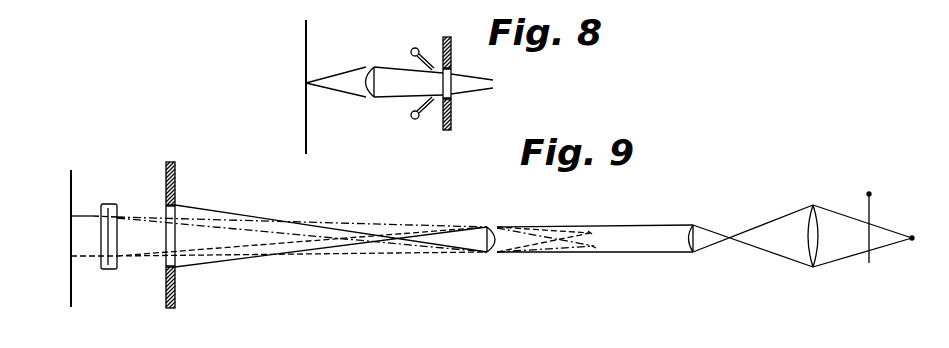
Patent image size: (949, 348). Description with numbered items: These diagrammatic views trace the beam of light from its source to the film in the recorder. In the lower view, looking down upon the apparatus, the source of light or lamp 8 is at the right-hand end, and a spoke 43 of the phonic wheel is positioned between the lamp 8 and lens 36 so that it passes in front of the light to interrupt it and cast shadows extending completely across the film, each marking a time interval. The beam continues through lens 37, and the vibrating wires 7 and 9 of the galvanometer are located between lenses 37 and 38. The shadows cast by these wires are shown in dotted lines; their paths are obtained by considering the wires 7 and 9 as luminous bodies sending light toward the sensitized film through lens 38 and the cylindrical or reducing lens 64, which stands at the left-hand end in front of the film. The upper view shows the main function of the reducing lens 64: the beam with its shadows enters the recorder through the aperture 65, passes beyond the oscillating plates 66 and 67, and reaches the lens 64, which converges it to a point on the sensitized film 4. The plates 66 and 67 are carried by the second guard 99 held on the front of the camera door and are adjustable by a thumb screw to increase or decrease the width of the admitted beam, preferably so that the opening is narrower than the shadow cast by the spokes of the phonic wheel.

In FIG. 8, the sensitized film 4 is at (303, 66).
In FIG. 9, the sensitized film 4 is at (70, 179).
In FIG. 8, the cylindrical or reducing lens 64 is at (371, 72).
In FIG. 9, the cylindrical or reducing lens 64 is at (111, 205).
In FIG. 8, the aperture 65 is at (451, 71).
In FIG. 9, the aperture 65 is at (166, 262).
In FIG. 8, the oscillating plate 66 is at (424, 52).
In FIG. 8, the oscillating plate 67 is at (424, 118).
In FIG. 8, the second guard 99 is at (452, 115).
In FIG. 9, the second guard 99 is at (177, 184).
In FIG. 9, the lens 38 is at (497, 251).
In FIG. 9, the vibrating wire 7 is at (591, 233).
In FIG. 9, the vibrating wire 9 is at (594, 247).
In FIG. 9, the lens 37 is at (688, 238).
In FIG. 9, the lens 36 is at (815, 223).
In FIG. 9, the spoke 43 is at (871, 209).
In FIG. 9, the source of light or lamp 8 is at (922, 224).